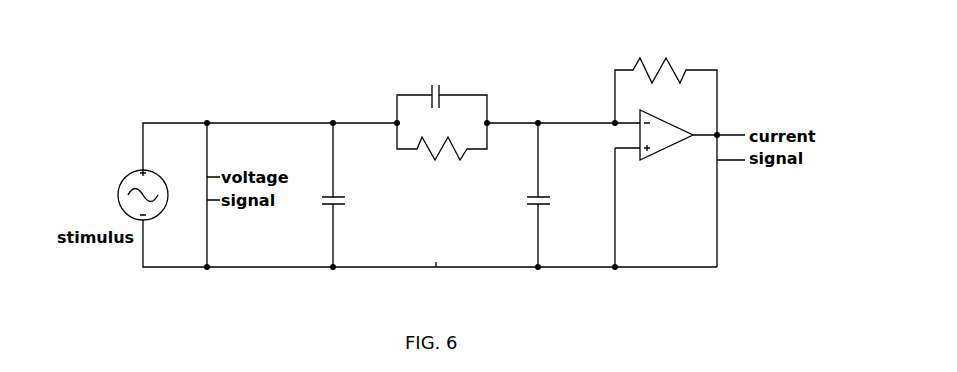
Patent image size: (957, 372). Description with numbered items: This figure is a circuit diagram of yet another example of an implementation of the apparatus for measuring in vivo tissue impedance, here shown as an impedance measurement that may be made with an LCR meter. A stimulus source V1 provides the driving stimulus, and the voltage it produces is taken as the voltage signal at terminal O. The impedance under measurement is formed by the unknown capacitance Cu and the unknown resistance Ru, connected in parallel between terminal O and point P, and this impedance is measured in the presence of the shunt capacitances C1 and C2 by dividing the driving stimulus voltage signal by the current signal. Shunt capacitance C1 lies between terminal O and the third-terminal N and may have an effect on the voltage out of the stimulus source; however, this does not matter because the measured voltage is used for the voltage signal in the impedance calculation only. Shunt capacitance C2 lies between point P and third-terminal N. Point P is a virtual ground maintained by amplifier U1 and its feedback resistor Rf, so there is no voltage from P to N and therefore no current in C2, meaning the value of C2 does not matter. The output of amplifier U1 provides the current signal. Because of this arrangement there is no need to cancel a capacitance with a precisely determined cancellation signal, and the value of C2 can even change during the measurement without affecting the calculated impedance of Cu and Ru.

The stimulus voltage source V1 is at (137, 183).
The shunt capacitance C1 is at (343, 195).
The shunt capacitance C2 is at (549, 195).
The unknown capacitance Cu is at (442, 93).
The unknown resistance Ru is at (442, 155).
The feedback resistor Rf is at (666, 86).
The amplifier U1 is at (680, 183).
The terminal O is at (333, 103).
The point P is at (538, 103).
The third-terminal N is at (436, 277).